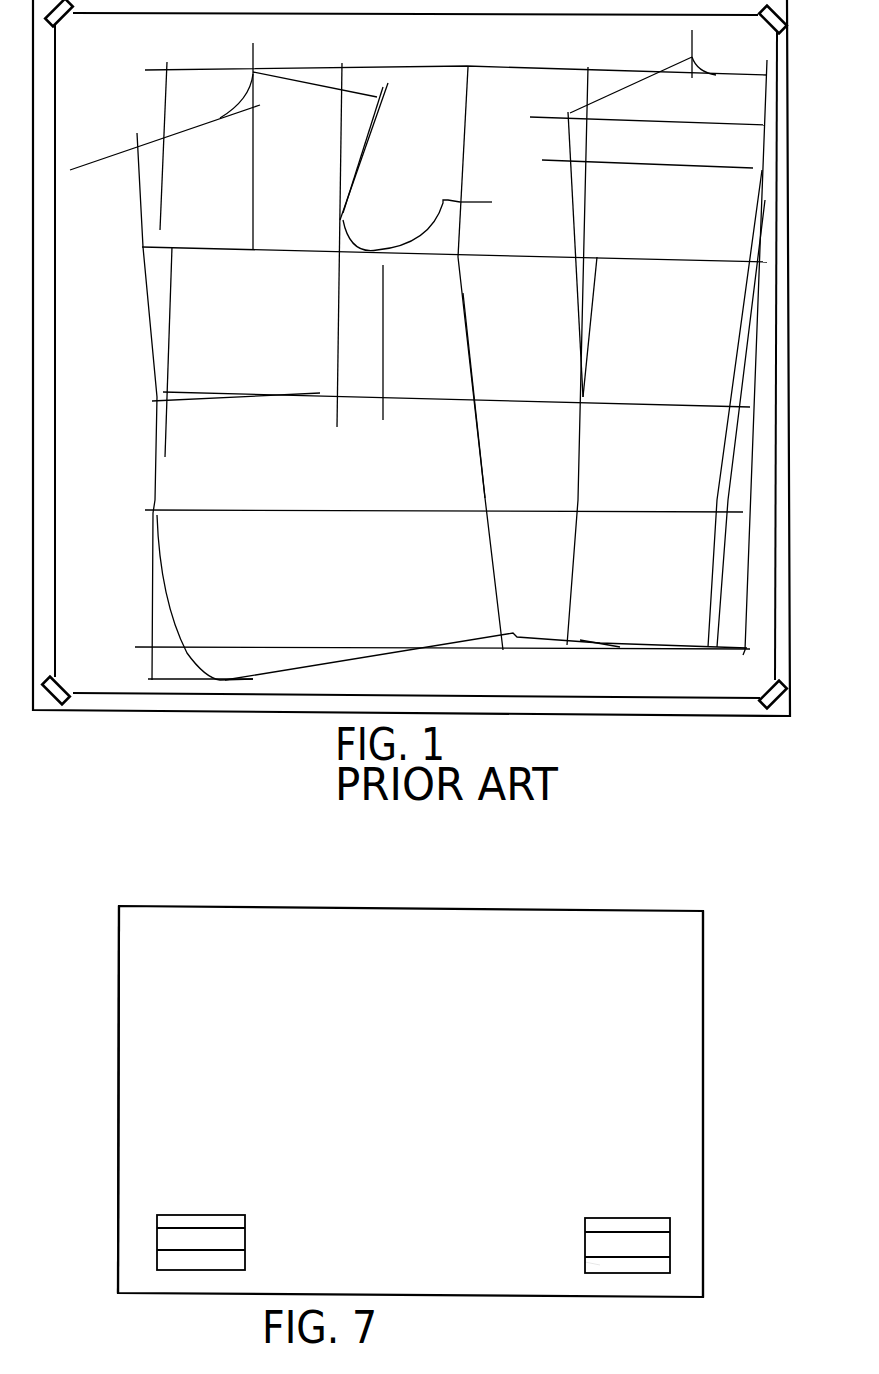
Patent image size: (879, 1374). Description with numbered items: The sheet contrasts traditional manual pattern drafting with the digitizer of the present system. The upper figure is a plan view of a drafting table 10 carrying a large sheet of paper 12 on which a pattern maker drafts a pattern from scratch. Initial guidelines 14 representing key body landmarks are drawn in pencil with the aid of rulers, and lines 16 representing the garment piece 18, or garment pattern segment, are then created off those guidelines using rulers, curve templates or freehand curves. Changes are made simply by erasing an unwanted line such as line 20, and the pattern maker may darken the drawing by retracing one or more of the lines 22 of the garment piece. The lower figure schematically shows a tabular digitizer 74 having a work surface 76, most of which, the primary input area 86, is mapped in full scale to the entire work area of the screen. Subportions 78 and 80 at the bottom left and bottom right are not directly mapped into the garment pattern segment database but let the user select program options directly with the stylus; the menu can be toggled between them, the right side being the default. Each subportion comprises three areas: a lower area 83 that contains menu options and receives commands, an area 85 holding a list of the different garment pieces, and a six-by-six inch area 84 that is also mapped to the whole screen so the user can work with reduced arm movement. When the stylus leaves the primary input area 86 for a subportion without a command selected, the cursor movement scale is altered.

In FIG. 1, the drafting table 10 is at (790, 678).
In FIG. 1, the sheet of paper 12 is at (760, 638).
In FIG. 1, the initial guidelines 14 is at (535, 70).
In FIG. 1, the lines 16 is at (462, 368).
In FIG. 1, the garment piece 18 is at (190, 552).
In FIG. 1, the line 20 is at (165, 165).
In FIG. 1, the lines 22 is at (348, 662).
In FIG. 7, the tabular digitizer 74 is at (596, 906).
In FIG. 7, the work surface 76 is at (142, 993).
In FIG. 7, the subportion 78 is at (200, 1214).
In FIG. 7, the subportion 80 is at (639, 1257).
In FIG. 7, the lower area 83 is at (600, 1265).
In FIG. 7, the area 84 is at (660, 1248).
In FIG. 7, the area 85 is at (603, 1222).
In FIG. 7, the primary input area 86 is at (668, 1012).